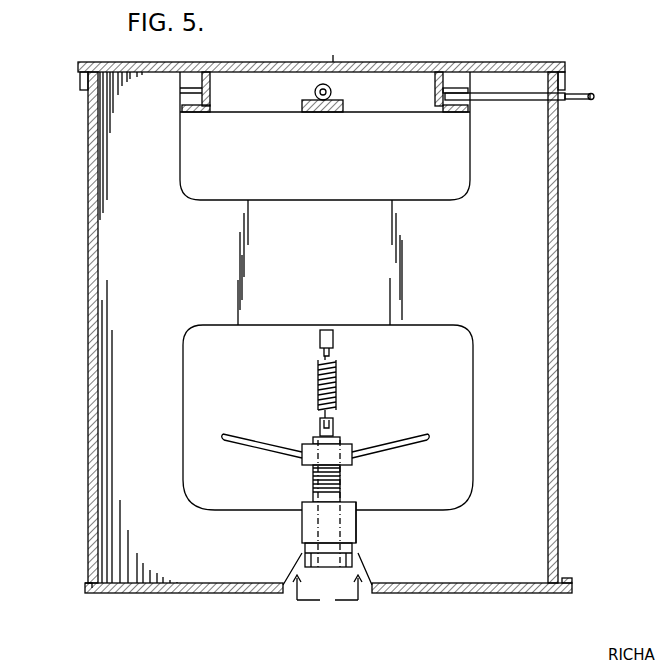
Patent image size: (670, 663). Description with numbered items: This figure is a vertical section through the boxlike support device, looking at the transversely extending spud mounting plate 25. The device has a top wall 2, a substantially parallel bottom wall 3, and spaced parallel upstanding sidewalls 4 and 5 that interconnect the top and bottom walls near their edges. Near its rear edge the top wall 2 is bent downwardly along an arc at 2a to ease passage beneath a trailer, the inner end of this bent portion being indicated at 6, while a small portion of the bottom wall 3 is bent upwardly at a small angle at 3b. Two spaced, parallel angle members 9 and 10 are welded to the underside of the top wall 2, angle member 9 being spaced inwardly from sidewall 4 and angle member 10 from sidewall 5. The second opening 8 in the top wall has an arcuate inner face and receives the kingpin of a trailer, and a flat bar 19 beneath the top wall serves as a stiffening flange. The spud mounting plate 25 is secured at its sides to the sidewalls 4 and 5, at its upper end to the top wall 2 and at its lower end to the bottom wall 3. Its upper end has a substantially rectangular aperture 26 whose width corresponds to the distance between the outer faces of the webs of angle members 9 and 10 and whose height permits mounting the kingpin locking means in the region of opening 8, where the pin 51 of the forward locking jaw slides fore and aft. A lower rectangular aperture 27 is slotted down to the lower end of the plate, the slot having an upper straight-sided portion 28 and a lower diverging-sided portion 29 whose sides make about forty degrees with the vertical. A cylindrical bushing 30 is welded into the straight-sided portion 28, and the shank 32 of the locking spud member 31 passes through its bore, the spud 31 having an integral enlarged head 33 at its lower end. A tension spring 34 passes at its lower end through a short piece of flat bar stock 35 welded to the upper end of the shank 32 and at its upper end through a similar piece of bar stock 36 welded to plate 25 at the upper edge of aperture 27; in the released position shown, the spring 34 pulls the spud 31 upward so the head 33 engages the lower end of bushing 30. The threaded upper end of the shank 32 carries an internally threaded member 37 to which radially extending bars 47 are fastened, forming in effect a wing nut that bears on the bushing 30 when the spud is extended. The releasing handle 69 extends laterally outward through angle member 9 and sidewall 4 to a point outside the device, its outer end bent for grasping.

The top wall 2 is at (505, 62).
The arcuately bent portion of top wall 2a is at (84, 90).
The bottom wall 3 is at (188, 594).
The upwardly bent portion of bottom wall 3b is at (92, 583).
The sidewall 4 is at (558, 300).
The sidewall 5 is at (88, 297).
The inner end of bent portion 6 is at (326, 600).
The second opening 8 is at (338, 62).
The angle member 9 is at (450, 112).
The angle member 10 is at (205, 112).
The flat bar 19 is at (325, 112).
The spud mounting plate 25 is at (340, 275).
The upper aperture 26 is at (318, 200).
The lower aperture 27 is at (185, 370).
The upper straight-sided portion of slot 28 is at (357, 527).
The lower diverging-sided portion of slot 29 is at (368, 580).
The cylindrical bushing 30 is at (305, 521).
The locking spud member 31 is at (304, 488).
The shank 32 is at (337, 497).
The enlarged head 33 is at (346, 568).
The tension spring 34 is at (337, 385).
The flat bar stock piece 35 is at (334, 428).
The flat bar stock piece 36 is at (334, 343).
The internally threaded member 37 is at (310, 446).
The bars 47 is at (245, 446).
The pin 51 is at (314, 92).
The releasing handle 69 is at (584, 100).